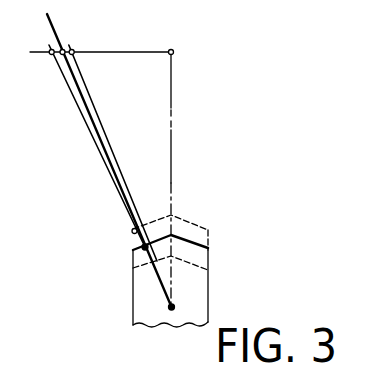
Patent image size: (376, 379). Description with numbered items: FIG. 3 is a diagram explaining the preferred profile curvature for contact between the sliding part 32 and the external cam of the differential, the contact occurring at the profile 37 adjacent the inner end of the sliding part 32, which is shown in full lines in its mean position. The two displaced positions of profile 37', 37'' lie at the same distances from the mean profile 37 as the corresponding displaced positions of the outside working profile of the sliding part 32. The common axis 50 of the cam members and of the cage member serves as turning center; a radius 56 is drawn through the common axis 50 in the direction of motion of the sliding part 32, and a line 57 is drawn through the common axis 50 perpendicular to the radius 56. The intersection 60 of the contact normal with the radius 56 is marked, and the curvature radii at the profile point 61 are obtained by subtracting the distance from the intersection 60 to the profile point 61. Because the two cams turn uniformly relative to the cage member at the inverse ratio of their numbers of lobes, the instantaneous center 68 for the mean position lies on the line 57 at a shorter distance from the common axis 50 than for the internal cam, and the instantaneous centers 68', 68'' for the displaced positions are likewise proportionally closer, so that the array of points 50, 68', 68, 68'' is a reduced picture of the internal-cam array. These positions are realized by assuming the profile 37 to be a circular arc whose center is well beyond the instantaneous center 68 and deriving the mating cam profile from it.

The sliding part 32 is at (197, 257).
The profile 37 is at (188, 219).
The position of profile 37' is at (176, 218).
The position of profile 37'' is at (195, 281).
The common axis 50 is at (174, 50).
The radius 56 is at (172, 148).
The line 57 is at (98, 55).
The intersection 60 is at (174, 307).
The profile point 61 is at (141, 247).
The instantaneous center 68 is at (109, 160).
The instantaneous center 68' is at (113, 147).
The instantaneous center 68'' is at (84, 146).